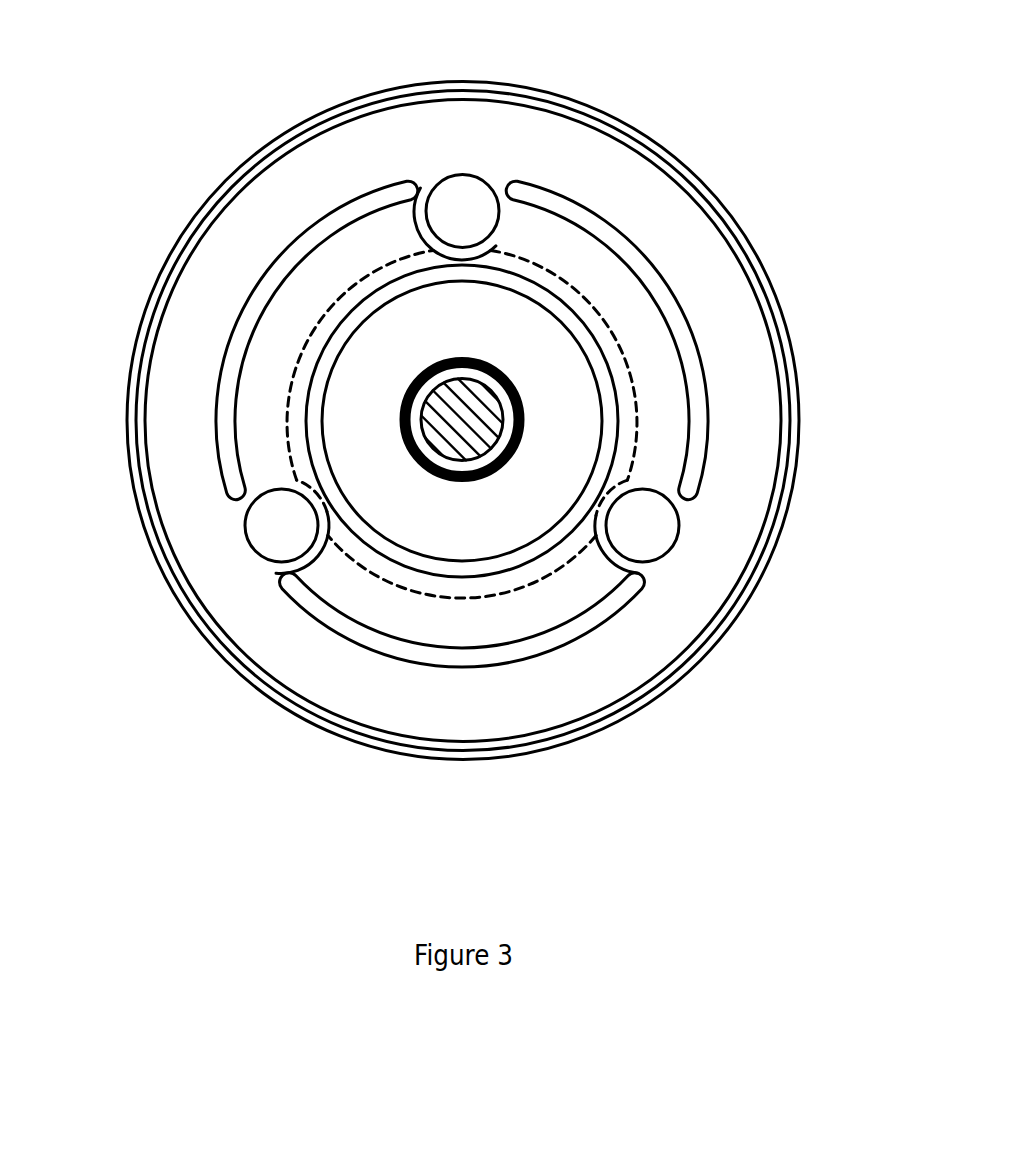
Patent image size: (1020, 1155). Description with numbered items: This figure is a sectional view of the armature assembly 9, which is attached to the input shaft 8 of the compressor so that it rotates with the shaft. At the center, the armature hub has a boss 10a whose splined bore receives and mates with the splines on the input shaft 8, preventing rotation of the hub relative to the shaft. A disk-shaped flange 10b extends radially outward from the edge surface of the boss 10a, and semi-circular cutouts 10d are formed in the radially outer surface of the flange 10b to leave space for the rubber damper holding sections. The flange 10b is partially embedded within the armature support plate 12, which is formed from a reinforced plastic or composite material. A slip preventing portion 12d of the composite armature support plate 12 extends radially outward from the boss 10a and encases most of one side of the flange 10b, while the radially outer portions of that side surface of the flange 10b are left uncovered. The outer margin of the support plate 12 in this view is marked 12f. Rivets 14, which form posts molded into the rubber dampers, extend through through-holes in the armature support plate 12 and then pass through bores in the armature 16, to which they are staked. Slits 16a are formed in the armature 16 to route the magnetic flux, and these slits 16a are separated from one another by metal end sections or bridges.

The input shaft 8 is at (438, 440).
The armature assembly 9 is at (472, 426).
The boss 10a is at (518, 446).
The disk-shaped flange 10b is at (397, 545).
The semi-circular cutouts 10d is at (420, 180).
The armature support plate 12 is at (715, 194).
The slip preventing portion 12d is at (472, 543).
The flange 12f is at (778, 518).
The rivets 14 is at (475, 195).
The armature 16 is at (736, 292).
The slits 16a is at (226, 347).